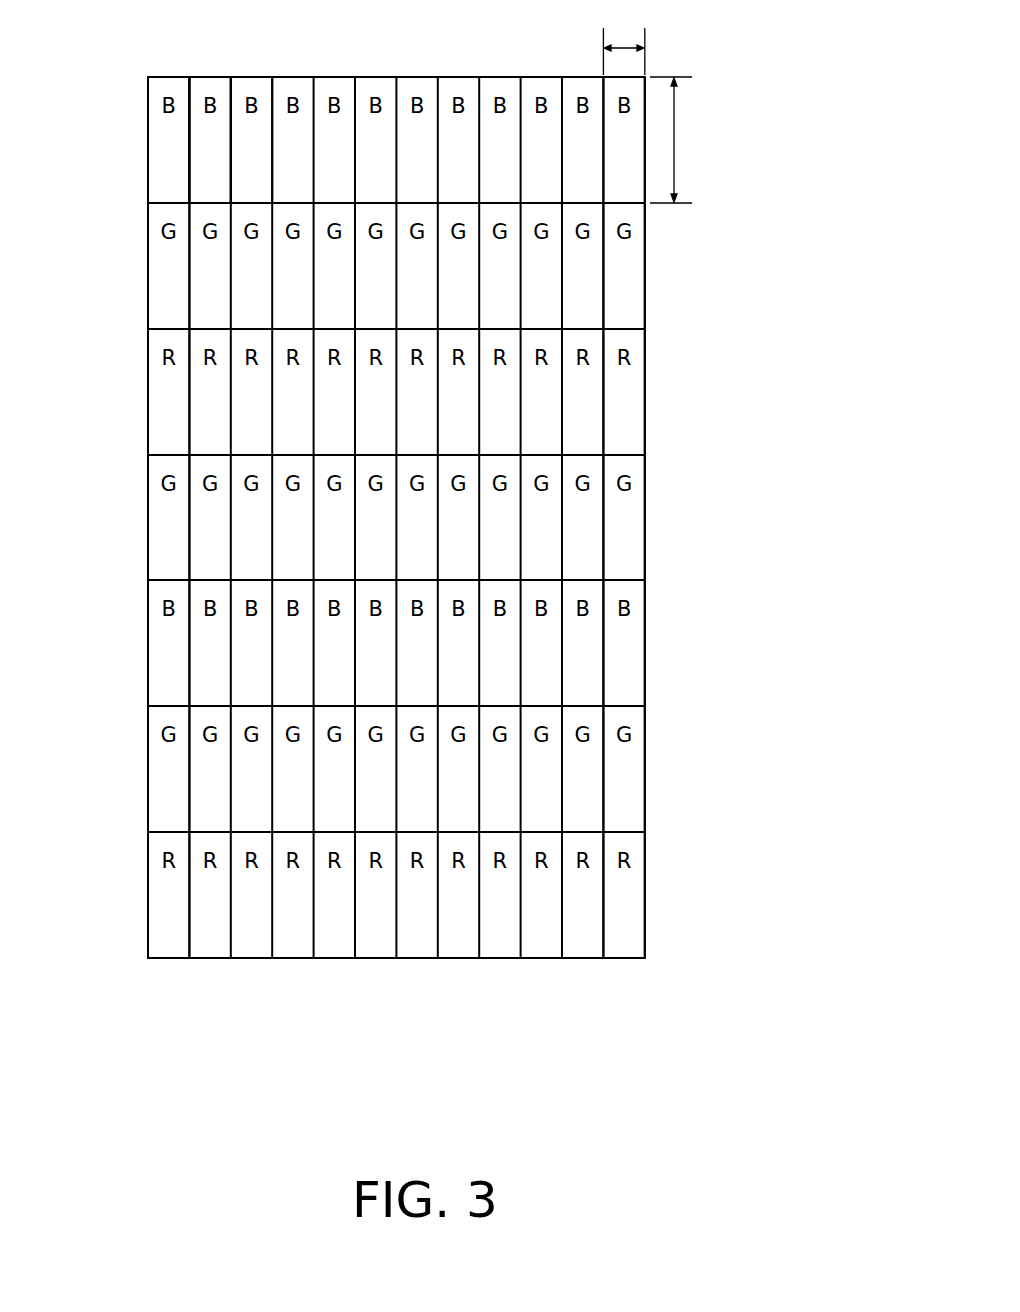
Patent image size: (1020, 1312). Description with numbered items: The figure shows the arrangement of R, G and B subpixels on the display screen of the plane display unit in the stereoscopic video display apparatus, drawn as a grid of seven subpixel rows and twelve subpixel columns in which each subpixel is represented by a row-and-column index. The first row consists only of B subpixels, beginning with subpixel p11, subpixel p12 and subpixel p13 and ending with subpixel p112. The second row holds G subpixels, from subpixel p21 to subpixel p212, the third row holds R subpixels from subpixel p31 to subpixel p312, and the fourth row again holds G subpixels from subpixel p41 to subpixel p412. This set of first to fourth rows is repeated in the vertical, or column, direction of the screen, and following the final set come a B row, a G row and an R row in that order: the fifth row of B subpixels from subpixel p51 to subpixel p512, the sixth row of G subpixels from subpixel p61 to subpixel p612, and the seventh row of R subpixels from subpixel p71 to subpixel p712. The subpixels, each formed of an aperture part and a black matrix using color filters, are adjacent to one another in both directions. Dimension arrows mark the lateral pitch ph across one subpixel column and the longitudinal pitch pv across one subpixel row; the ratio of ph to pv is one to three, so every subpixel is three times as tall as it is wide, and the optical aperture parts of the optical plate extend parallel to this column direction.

The subpixel p11 is at (158, 128).
The subpixel p12 is at (219, 90).
The subpixel p13 is at (258, 88).
The subpixel p112 is at (612, 103).
The subpixel p21 is at (158, 254).
The subpixel p212 is at (625, 254).
The subpixel p31 is at (158, 380).
The subpixel p312 is at (625, 380).
The subpixel p41 is at (158, 506).
The subpixel p412 is at (625, 506).
The subpixel p51 is at (158, 631).
The subpixel p512 is at (625, 631).
The subpixel p61 is at (158, 757).
The subpixel p612 is at (625, 757).
The subpixel p71 is at (158, 883).
The subpixel p712 is at (625, 883).
The pitch of subpixels in the lateral direction ph is at (623, 42).
The pitch of subpixels in the longitudinal direction pv is at (676, 140).